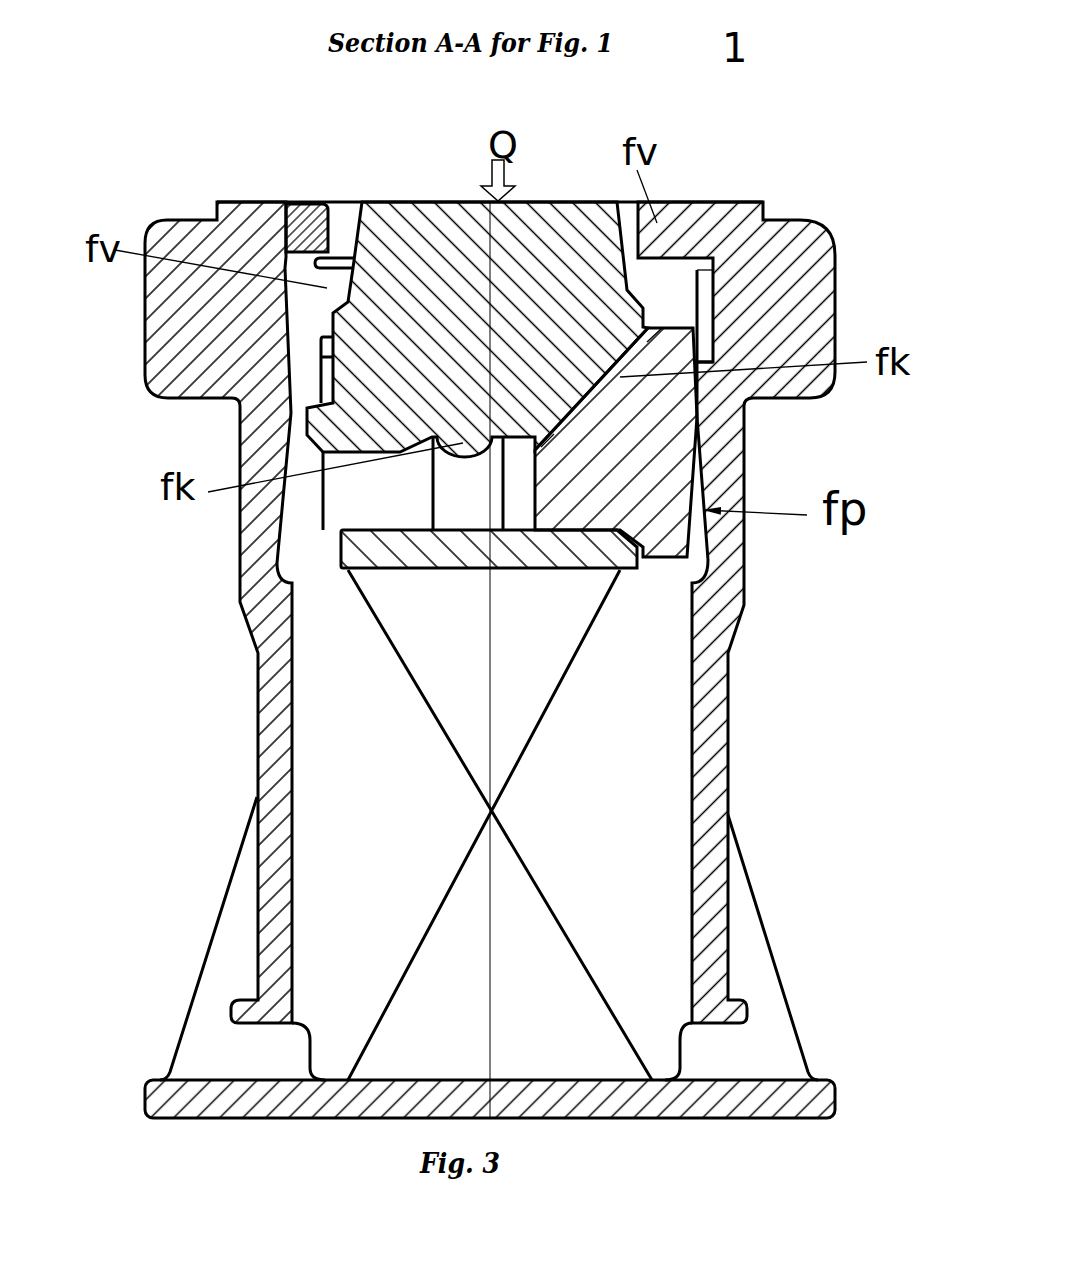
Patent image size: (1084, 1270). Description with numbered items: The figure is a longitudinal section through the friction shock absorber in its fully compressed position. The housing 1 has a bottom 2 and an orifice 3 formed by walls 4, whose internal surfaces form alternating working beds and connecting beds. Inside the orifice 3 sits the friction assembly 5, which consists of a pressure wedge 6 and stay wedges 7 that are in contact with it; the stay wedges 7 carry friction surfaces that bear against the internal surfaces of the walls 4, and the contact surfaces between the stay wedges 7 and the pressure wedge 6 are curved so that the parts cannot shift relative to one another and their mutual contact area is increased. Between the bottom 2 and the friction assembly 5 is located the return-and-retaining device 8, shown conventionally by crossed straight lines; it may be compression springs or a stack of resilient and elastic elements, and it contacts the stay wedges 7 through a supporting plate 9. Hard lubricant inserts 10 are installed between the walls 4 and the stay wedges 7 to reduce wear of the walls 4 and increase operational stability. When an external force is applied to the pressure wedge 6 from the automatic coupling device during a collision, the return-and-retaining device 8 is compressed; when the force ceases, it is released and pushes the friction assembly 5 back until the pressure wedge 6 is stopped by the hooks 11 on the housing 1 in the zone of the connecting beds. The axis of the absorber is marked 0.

The axis 0 is at (492, 657).
The housing 1 is at (745, 955).
The bottom 2 is at (205, 1087).
The orifice 3 is at (753, 418).
The walls 4 is at (267, 418).
The friction assembly 5 is at (545, 175).
The pressure wedge 6 is at (422, 242).
The stay wedges 7 is at (633, 477).
The return-and-retaining device 8 is at (458, 808).
The supporting plate 9 is at (372, 547).
The hard lubricant inserts 10 is at (337, 262).
The hooks 11 is at (305, 203).